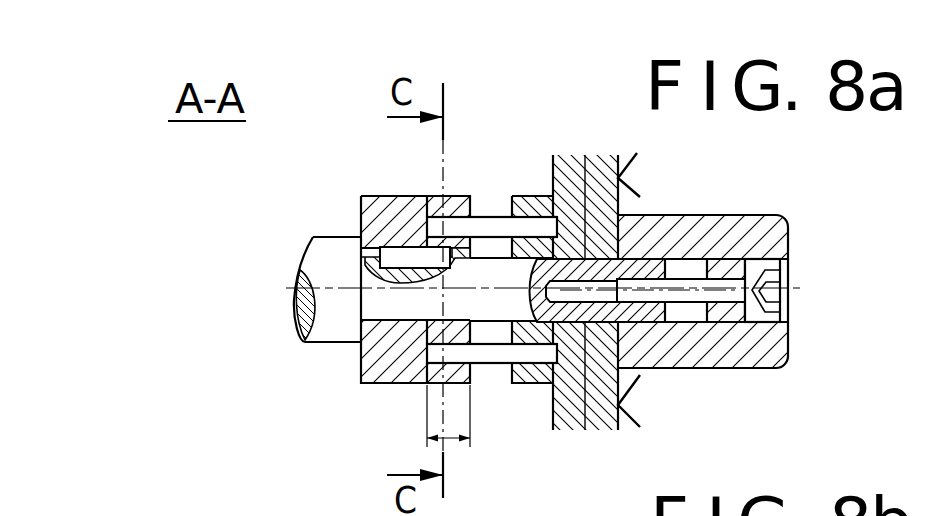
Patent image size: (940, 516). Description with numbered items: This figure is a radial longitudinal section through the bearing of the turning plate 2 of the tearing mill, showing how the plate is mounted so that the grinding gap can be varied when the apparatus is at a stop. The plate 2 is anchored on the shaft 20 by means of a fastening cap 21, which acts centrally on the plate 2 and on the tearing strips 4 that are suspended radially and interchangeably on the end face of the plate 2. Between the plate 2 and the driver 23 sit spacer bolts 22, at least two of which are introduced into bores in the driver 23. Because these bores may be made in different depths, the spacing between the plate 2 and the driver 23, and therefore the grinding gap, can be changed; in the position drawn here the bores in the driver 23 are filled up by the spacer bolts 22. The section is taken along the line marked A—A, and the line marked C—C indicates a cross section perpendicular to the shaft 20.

The plate 2 is at (553, 178).
The tearing strips 4 is at (640, 195).
The shaft 20 is at (362, 271).
The fastening cap 21 is at (788, 216).
The spacer bolts 22 is at (490, 217).
The driver 23 is at (362, 367).